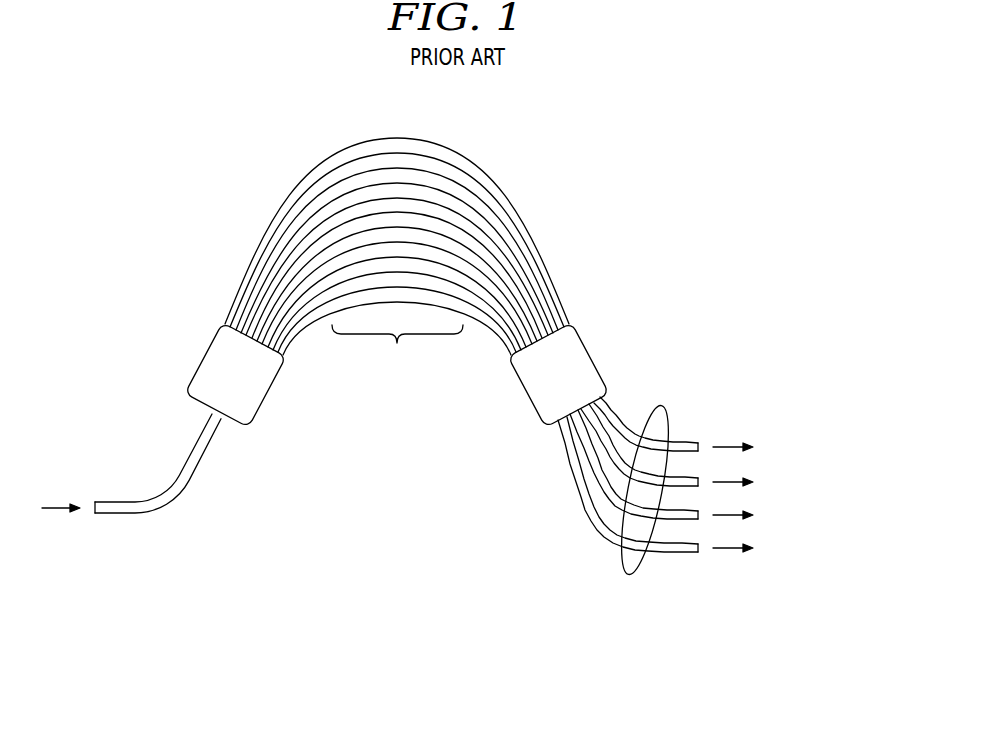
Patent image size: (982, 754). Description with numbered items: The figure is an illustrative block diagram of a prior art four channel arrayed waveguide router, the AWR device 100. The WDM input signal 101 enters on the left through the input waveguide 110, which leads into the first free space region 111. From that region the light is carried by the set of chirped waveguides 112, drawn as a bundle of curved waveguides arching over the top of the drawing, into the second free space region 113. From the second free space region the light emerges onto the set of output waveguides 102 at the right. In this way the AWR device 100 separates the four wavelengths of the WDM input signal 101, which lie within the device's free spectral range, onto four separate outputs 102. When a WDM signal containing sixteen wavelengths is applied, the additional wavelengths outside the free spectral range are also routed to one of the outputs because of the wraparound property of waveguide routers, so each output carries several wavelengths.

The AWR device 100 is at (529, 209).
The WDM input signal 101 is at (115, 500).
The output waveguides 102 is at (661, 404).
The input waveguide 110 is at (199, 466).
The first free space region 111 is at (267, 394).
The set of chirped waveguides 112 is at (397, 350).
The second free space region 113 is at (530, 396).